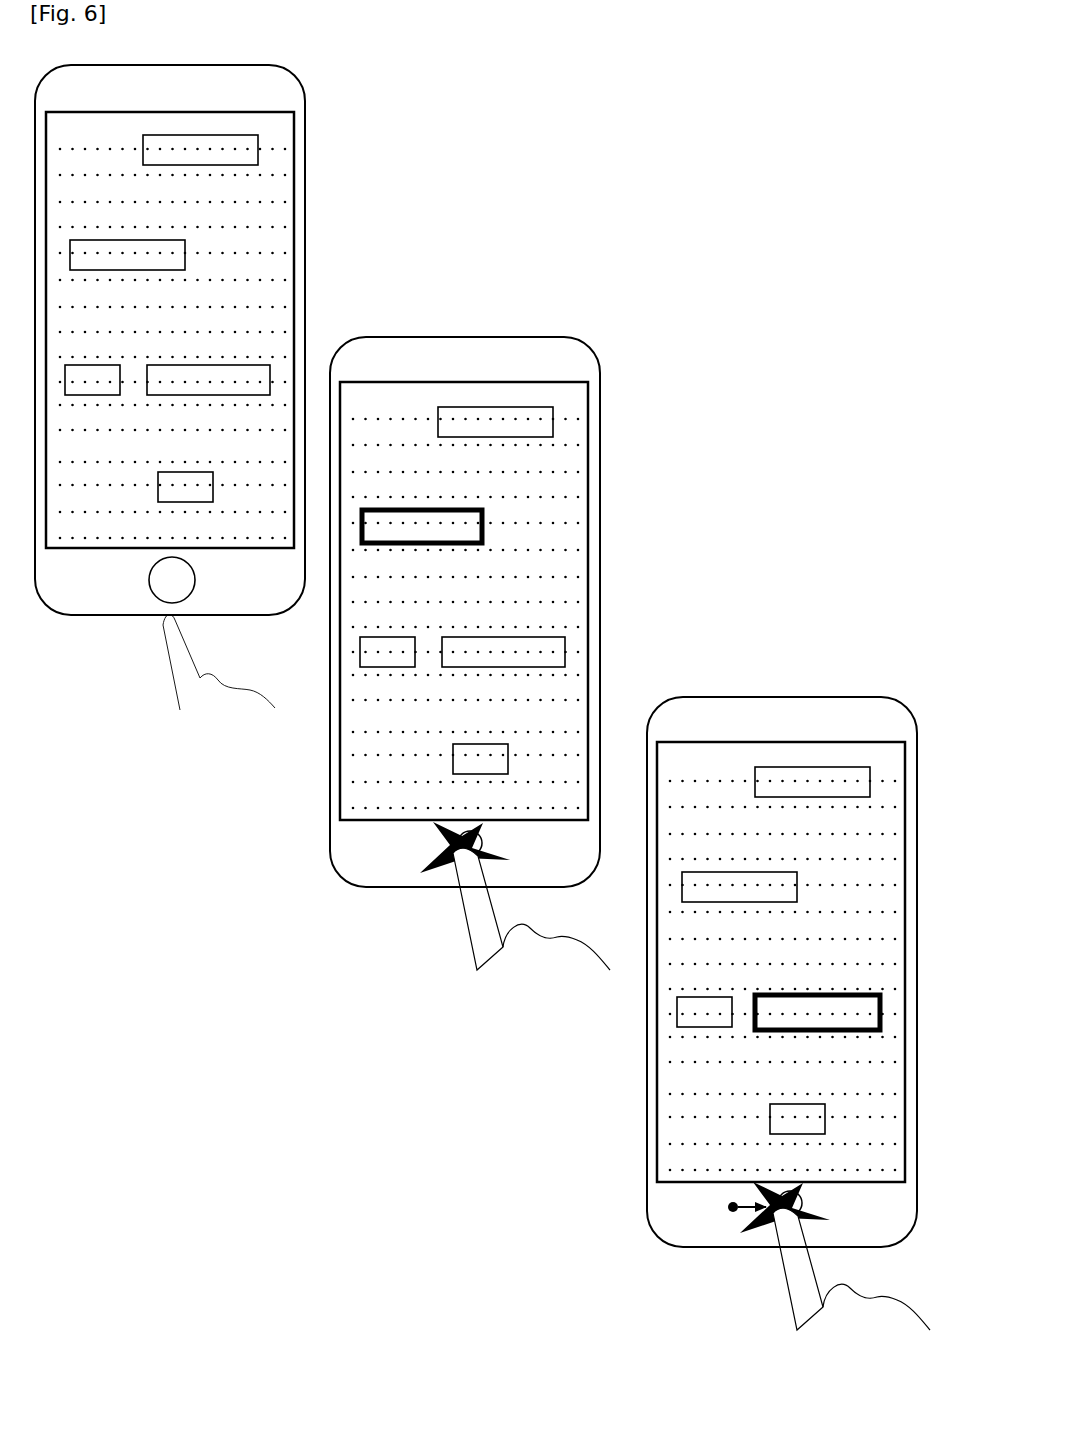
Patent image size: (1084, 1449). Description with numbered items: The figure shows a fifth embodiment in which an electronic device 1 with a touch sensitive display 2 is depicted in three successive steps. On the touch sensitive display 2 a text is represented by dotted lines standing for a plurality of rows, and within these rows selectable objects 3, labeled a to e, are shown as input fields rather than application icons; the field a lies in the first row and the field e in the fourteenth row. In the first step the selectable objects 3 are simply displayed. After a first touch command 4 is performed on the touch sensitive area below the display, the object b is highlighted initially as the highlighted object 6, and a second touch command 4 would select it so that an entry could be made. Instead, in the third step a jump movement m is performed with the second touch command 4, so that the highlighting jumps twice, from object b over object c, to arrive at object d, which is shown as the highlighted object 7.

The electronic device 1 is at (780, 690).
The touch sensitive display 2 is at (655, 1087).
The selectable object 3 is at (219, 488).
The touch command 4 is at (439, 843).
The initially highlighted object 6 is at (421, 551).
The highlighted object after jump 7 is at (751, 1009).
The jump movement m is at (743, 1221).